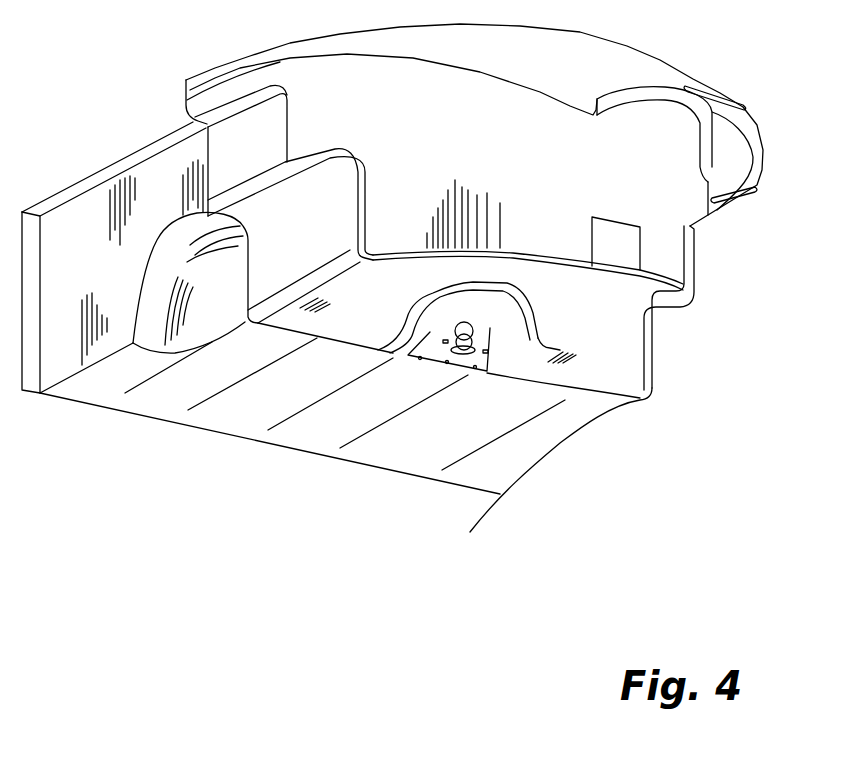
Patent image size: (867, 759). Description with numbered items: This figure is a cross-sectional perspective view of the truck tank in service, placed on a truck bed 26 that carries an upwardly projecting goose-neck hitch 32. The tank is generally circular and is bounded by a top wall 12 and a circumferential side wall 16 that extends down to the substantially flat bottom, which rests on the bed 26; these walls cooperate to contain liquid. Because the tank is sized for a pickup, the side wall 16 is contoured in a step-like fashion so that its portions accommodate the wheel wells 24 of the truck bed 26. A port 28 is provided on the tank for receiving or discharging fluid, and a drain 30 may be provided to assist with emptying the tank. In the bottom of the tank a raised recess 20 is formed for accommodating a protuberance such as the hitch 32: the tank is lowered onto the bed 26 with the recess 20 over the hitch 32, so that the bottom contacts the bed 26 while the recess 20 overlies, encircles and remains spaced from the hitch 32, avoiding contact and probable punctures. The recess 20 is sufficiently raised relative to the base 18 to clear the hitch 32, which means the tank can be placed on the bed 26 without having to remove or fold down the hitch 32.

The top wall 12 is at (574, 70).
The side wall 16 is at (482, 146).
The base 18 is at (383, 313).
The raised recess 20 is at (655, 344).
The wheel well 24 is at (233, 306).
The truck bed 26 is at (106, 273).
The port 28 is at (667, 97).
The drain 30 is at (630, 254).
The goose-neck hitch 32 is at (477, 368).